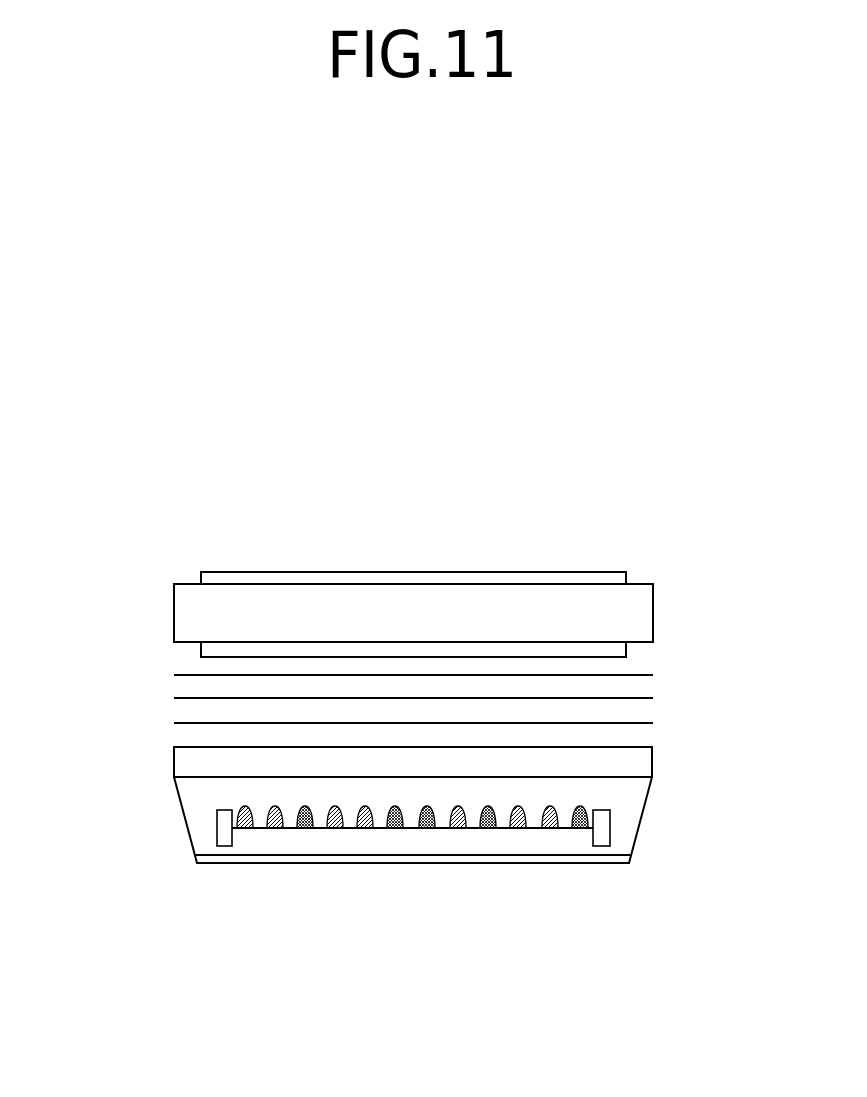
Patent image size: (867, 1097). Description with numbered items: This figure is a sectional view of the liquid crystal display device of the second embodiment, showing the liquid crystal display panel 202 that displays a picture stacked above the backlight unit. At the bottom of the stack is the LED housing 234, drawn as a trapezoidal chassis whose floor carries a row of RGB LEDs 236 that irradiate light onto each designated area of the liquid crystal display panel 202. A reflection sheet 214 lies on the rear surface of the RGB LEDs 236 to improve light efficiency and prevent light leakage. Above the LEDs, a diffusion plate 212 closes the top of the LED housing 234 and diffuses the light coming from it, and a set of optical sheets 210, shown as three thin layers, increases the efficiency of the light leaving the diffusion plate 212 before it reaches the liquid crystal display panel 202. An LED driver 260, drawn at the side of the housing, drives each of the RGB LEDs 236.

The liquid crystal display panel 202 is at (641, 612).
The optical sheets 210 is at (672, 673).
The diffusion plate 212 is at (640, 762).
The reflection sheet 214 is at (313, 858).
The LED housing 234 is at (641, 826).
The RGB LEDs 236 is at (248, 828).
The LED driver 260 is at (226, 830).